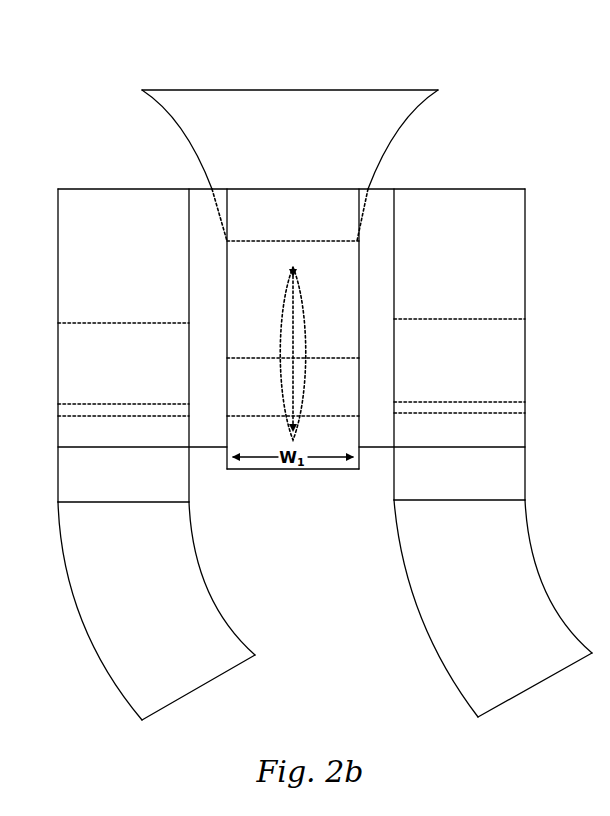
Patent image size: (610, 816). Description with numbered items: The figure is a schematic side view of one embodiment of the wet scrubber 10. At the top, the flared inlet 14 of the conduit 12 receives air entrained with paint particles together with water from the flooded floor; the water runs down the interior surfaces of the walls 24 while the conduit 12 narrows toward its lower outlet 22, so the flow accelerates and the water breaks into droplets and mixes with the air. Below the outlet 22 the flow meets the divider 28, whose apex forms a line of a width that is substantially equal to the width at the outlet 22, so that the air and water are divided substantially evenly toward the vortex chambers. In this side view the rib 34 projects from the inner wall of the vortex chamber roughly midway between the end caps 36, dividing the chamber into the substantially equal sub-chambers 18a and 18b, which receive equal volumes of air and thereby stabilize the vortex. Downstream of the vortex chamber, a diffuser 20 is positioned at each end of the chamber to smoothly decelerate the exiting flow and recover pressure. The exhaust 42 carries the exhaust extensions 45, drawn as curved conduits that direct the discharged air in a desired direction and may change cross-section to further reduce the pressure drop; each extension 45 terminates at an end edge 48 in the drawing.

The wet scrubber 10 is at (494, 137).
The conduit 12 is at (290, 198).
The inlet 14 is at (290, 86).
The sub-chamber 18a is at (123, 356).
The sub-chamber 18b is at (459, 353).
The diffuser 20 is at (291, 459).
The outlet 22 is at (261, 246).
The walls 24 is at (202, 146).
The divider 28 is at (315, 412).
The rib 34 is at (298, 344).
The end caps 36 is at (56, 290).
The exhaust 42 is at (126, 508).
The exhaust extensions 45 is at (325, 610).
The leg end edge 48 is at (201, 694).